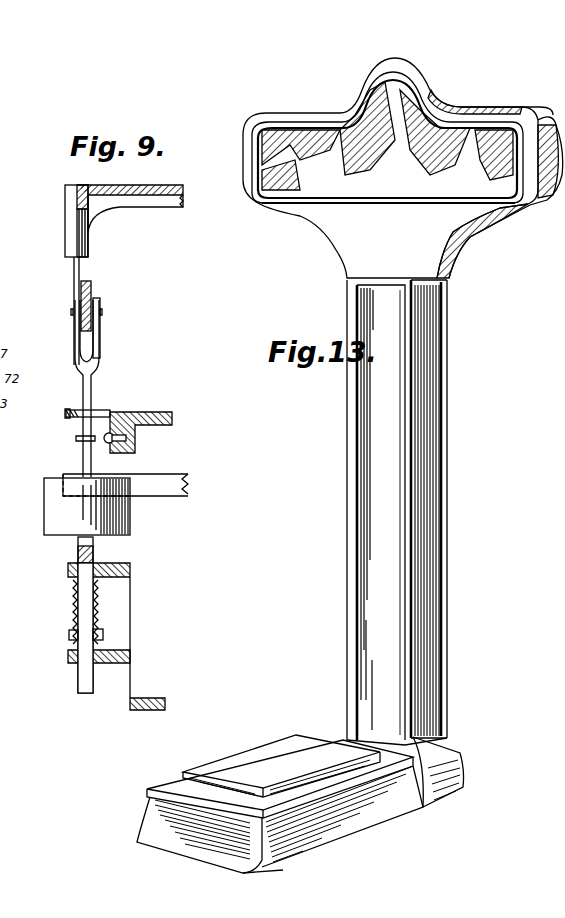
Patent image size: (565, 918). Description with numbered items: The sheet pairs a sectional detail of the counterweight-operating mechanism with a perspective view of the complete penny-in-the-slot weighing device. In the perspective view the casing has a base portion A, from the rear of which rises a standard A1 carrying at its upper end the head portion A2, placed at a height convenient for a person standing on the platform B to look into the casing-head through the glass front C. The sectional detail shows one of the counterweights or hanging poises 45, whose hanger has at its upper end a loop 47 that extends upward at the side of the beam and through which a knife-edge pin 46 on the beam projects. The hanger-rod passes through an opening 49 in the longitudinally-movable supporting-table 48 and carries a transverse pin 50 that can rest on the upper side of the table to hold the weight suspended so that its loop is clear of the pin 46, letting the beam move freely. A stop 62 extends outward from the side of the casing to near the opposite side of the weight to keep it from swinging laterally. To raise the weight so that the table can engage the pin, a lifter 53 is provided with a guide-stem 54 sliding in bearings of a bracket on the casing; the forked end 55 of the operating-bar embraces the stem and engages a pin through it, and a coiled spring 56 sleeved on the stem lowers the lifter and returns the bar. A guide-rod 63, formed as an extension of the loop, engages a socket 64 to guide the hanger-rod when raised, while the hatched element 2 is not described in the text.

In FIG. 9, the socket 64 is at (66, 222).
In FIG. 9, the guide-rod 63 is at (64, 272).
In FIG. 9, the block 2 is at (89, 283).
In FIG. 9, the knife-edge pin 46 is at (102, 312).
In FIG. 9, the loop 47 is at (102, 350).
In FIG. 9, the opening 49 is at (80, 410).
In FIG. 9, the supporting-table 48 is at (66, 414).
In FIG. 9, the transverse pin 50 is at (76, 439).
In FIG. 9, the stop 62 is at (190, 482).
In FIG. 9, the counterweight 45 is at (44, 503).
In FIG. 9, the lifter 53 is at (78, 552).
In FIG. 9, the guide-stem 54 is at (78, 683).
In FIG. 9, the coiled spring 56 is at (72, 600).
In FIG. 9, the forked end 55 is at (69, 634).
In FIG. 13, the glass front C is at (403, 168).
In FIG. 13, the head portion A2 is at (450, 218).
In FIG. 13, the standard A1 is at (449, 497).
In FIG. 13, the platform B is at (250, 752).
In FIG. 13, the base portion A is at (387, 823).